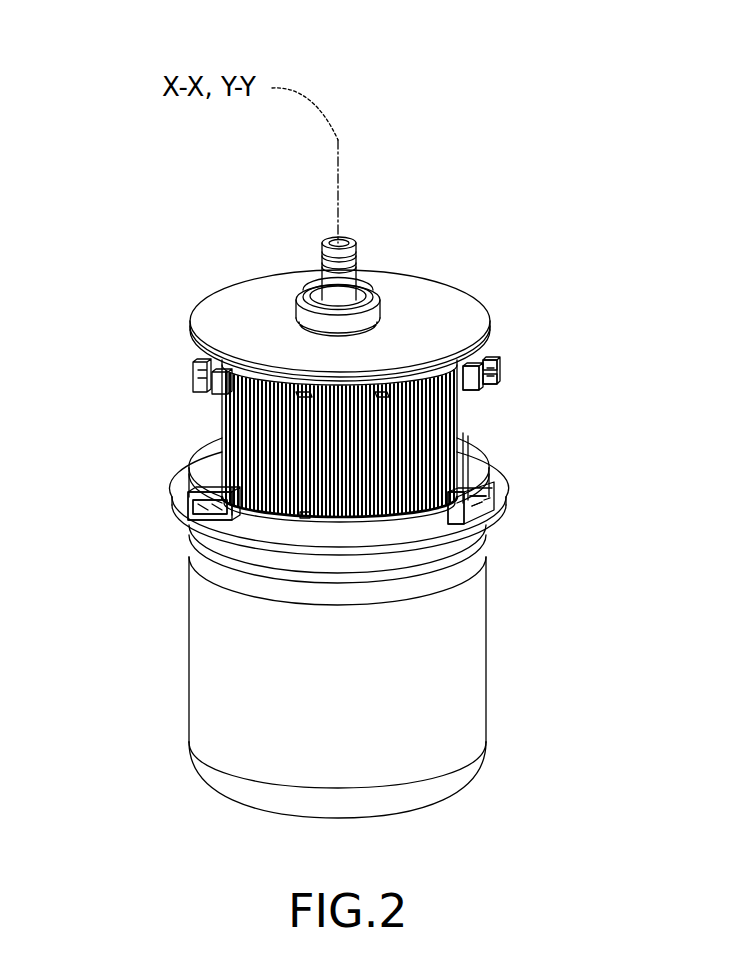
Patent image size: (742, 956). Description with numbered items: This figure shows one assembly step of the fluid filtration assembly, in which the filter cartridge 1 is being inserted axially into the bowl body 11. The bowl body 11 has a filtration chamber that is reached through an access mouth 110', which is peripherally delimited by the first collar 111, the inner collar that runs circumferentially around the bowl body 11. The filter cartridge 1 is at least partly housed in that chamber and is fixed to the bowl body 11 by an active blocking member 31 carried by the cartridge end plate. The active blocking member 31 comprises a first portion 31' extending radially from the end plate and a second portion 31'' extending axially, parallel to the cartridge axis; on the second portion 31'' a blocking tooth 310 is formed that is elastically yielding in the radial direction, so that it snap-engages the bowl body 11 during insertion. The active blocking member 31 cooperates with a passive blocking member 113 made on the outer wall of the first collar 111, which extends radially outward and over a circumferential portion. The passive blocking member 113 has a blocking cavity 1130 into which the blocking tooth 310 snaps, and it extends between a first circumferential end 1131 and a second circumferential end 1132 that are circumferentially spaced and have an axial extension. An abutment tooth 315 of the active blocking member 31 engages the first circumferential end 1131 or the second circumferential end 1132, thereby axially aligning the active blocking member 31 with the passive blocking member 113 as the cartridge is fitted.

The filter cartridge 1 is at (150, 244).
The bowl body 11 is at (165, 680).
The active blocking member 31 is at (359, 331).
The first portion 31' is at (526, 295).
The second portion 31'' is at (593, 393).
The blocking tooth 310 is at (495, 372).
The abutment tooth 315 is at (452, 378).
The access mouth 110' is at (257, 418).
The first collar 111 is at (183, 470).
The passive blocking member 113 is at (175, 503).
The blocking cavity 1130 is at (200, 524).
The first circumferential end 1131 is at (460, 522).
The second circumferential end 1132 is at (225, 523).